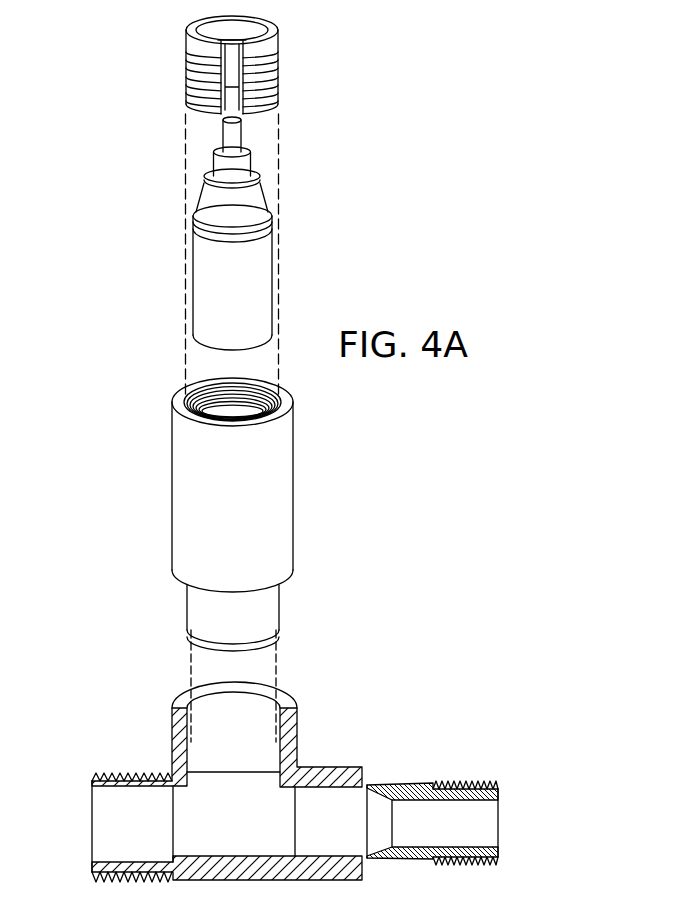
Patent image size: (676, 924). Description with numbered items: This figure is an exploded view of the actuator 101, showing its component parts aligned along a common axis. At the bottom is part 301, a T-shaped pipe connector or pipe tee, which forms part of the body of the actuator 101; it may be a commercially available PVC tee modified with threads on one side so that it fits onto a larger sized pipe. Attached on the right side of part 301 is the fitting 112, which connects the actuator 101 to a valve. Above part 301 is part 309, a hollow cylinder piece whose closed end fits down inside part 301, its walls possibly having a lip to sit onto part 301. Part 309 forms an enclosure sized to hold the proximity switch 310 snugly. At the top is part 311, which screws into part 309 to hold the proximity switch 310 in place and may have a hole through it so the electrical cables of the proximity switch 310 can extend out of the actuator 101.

The actuator 101 is at (393, 137).
The part 311 (cap) 311 is at (186, 40).
The proximity switch 310 is at (186, 286).
The part 309 (hollow cylinder piece) 309 is at (170, 488).
The part 301 (T-shaped pipe connector) 301 is at (119, 772).
The fitting 112 is at (501, 826).